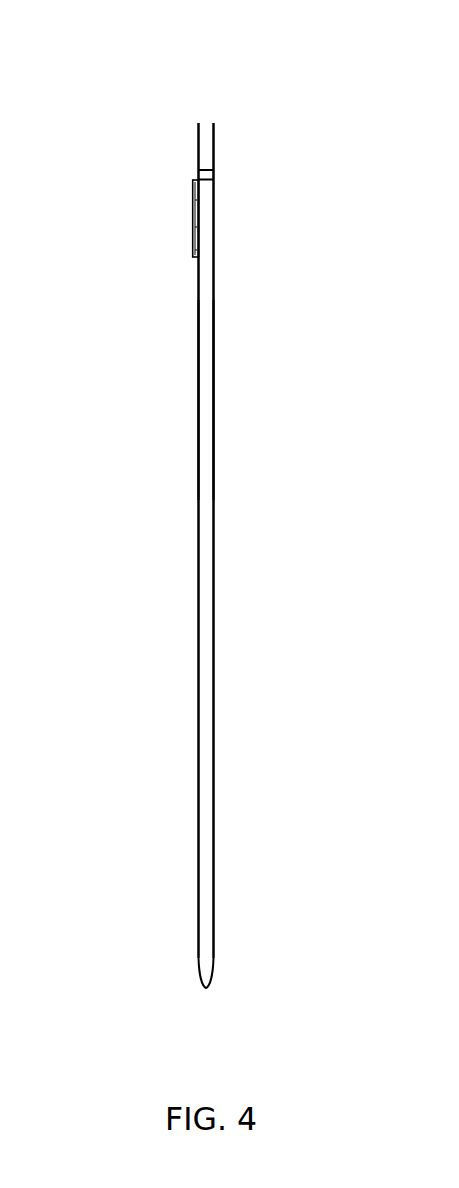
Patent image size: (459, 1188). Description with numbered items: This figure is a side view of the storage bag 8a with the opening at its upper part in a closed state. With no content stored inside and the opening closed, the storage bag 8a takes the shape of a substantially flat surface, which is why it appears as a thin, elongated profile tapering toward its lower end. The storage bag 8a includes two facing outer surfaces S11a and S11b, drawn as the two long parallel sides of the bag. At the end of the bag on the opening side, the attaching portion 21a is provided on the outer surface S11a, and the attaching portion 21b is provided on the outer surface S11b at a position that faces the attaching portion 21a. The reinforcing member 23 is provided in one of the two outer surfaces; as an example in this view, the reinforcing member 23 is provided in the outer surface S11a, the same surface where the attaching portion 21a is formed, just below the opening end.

The storage bag 8a is at (211, 62).
The attaching portion 21a is at (196, 143).
The attaching portion 21b is at (216, 144).
The reinforcing member 23 is at (194, 218).
The outer surface S11a is at (198, 502).
The outer surface S11b is at (214, 502).